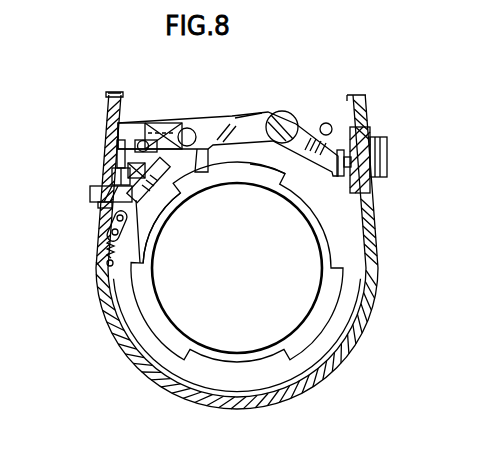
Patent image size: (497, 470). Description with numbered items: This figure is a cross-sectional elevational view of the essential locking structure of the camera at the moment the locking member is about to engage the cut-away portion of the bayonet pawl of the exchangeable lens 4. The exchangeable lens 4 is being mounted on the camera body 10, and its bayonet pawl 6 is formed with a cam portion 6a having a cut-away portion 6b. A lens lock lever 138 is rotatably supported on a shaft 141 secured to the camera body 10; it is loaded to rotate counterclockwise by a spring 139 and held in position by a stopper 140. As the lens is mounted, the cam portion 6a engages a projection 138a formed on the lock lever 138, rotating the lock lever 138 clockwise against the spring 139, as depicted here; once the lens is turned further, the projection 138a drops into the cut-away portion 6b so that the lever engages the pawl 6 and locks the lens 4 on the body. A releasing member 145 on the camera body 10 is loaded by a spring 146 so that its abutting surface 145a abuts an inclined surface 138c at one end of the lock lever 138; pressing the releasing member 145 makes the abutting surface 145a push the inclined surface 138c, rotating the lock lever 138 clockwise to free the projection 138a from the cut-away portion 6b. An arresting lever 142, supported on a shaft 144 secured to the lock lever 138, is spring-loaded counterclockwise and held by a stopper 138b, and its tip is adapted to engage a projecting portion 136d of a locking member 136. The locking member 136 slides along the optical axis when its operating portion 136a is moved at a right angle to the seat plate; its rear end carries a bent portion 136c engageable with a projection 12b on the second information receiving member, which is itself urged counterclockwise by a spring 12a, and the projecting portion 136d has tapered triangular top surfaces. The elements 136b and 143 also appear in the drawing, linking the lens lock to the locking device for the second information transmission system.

The exchangeable lens 4 is at (312, 372).
The bayonet pawl 6 is at (249, 178).
The cam portion 6a is at (283, 186).
The cut-away portion 6b is at (185, 205).
The camera body 10 is at (350, 345).
The spring 12a is at (106, 248).
The projection 12b is at (158, 238).
The locking member 136 is at (98, 205).
The operating portion 136a is at (90, 193).
The locking pawl 136b is at (152, 283).
The bent portion 136c is at (112, 172).
The projecting portion 136d is at (117, 150).
The lens lock lever 138 is at (230, 116).
The projection 138a is at (203, 174).
The stopper 138b is at (145, 140).
The inclined surface 138c is at (340, 177).
The spring 139 is at (245, 120).
The stopper 140 is at (322, 123).
The shaft 141 is at (282, 111).
The arresting lever 142 is at (110, 92).
The pivot block 143 is at (150, 123).
The shaft 144 is at (189, 128).
The releasing member 145 is at (378, 138).
The abutting surface 145a is at (340, 150).
The spring 146 is at (372, 185).